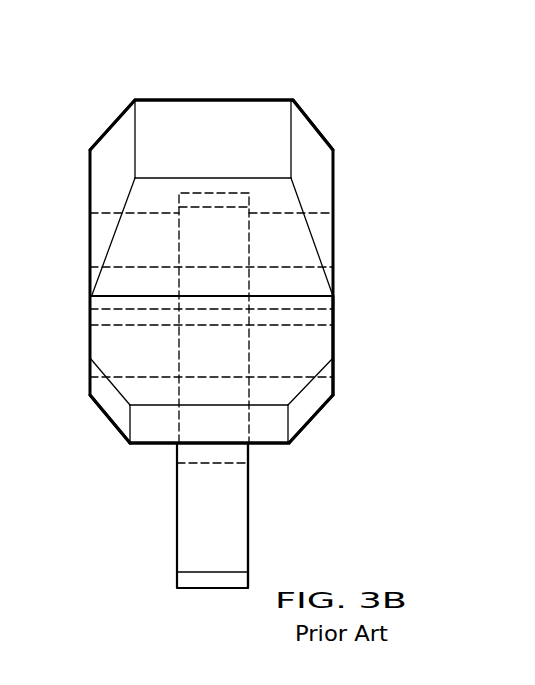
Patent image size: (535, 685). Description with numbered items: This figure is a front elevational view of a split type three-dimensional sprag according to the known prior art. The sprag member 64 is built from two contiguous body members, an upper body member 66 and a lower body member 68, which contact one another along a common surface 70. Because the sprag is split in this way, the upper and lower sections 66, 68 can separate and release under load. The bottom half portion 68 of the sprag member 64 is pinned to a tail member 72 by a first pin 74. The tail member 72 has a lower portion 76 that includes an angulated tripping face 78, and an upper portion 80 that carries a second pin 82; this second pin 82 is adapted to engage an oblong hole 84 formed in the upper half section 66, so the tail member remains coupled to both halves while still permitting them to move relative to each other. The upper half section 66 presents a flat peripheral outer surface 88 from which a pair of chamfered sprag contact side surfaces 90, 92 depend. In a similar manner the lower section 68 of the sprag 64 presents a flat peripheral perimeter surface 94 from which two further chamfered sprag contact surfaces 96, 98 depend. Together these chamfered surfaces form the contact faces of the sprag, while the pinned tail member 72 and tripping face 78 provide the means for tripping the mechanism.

The sprag member 64 is at (211, 224).
The upper body member 66 is at (331, 237).
The lower body member 68 is at (373, 345).
The common surface 70 is at (251, 285).
The tail member 72 is at (181, 447).
The first pin 74 is at (174, 348).
The lower portion 76 is at (292, 515).
The angulated tripping face 78 is at (256, 515).
The upper portion 80 is at (178, 287).
The second pin 82 is at (142, 232).
The oblong hole 84 is at (260, 241).
The flat peripheral outer surface 88 is at (206, 106).
The chamfered sprag contact side surface 90 is at (84, 129).
The chamfered sprag contact side surface 92 is at (337, 126).
The flat peripheral perimeter surface 94 is at (179, 489).
The chamfered sprag contact surface 96 is at (76, 402).
The chamfered sprag contact surface 98 is at (342, 404).